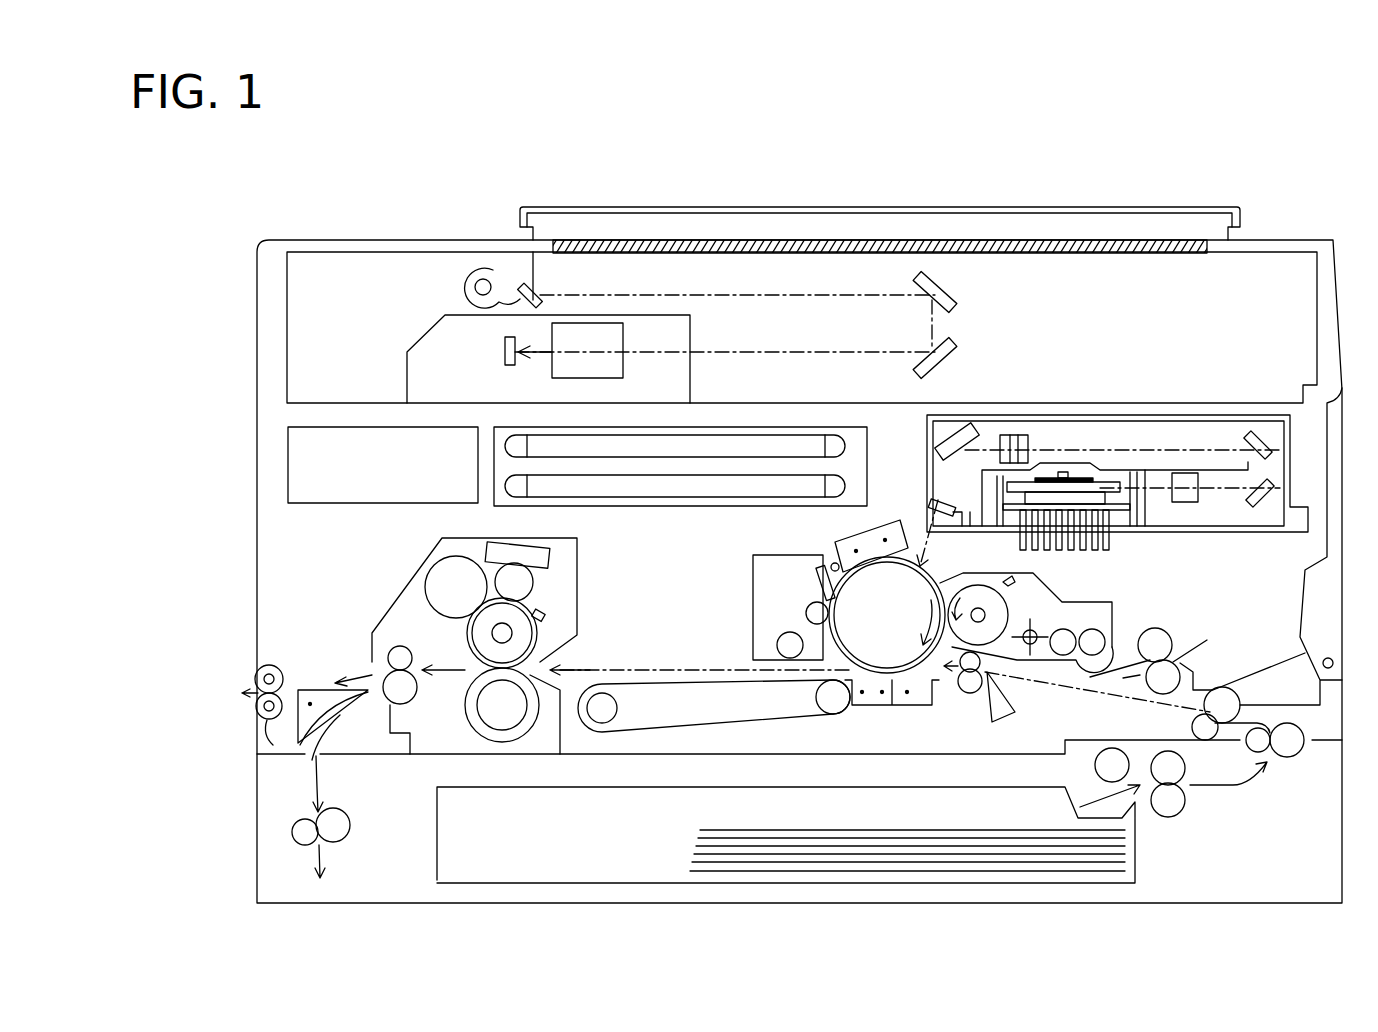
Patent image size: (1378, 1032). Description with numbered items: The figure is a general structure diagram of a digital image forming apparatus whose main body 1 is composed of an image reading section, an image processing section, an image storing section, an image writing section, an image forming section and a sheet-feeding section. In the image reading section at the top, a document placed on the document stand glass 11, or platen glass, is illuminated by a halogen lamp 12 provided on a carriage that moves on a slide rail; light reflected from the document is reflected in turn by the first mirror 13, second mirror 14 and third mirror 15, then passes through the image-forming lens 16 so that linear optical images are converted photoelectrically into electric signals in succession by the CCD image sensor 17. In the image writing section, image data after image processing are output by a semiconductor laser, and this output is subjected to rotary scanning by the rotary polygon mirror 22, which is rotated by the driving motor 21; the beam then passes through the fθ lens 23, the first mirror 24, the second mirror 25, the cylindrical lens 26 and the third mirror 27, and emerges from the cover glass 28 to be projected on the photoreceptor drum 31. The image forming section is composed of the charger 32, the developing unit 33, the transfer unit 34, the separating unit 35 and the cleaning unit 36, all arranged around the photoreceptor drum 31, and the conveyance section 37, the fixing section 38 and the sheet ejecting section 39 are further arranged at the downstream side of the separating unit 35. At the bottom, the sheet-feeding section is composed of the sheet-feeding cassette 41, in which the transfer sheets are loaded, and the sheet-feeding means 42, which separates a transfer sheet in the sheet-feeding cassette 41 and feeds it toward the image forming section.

The image forming apparatus main body 1 is at (1364, 266).
The document stand glass 11 is at (1092, 254).
The halogen lamp 12 is at (462, 289).
The first mirror 13 is at (538, 293).
The second mirror 14 is at (950, 290).
The third mirror 15 is at (950, 368).
The image-forming lens 16 is at (623, 367).
The CCD image sensor 17 is at (504, 351).
The driving motor 21 is at (1117, 514).
The rotary polygon mirror 22 is at (1123, 488).
The fθ lens 23 is at (1187, 503).
The first mirror 24 is at (1264, 501).
The second mirror 25 is at (1253, 432).
The cylindrical lens 26 is at (1029, 446).
The third mirror 27 is at (953, 428).
The cover glass 28 is at (930, 510).
The photoreceptor drum 31 is at (940, 576).
The charger 32 is at (838, 544).
The developing unit 33 is at (1050, 585).
The transfer unit 34 is at (909, 706).
The separating unit 35 is at (876, 706).
The cleaning unit 36 is at (753, 617).
The conveyance section 37 is at (706, 722).
The fixing section 38 is at (578, 575).
The sheet ejecting section 39 is at (275, 667).
The sheet-feeding cassette 41 is at (437, 836).
The sheet-feeding means 42 is at (1207, 809).